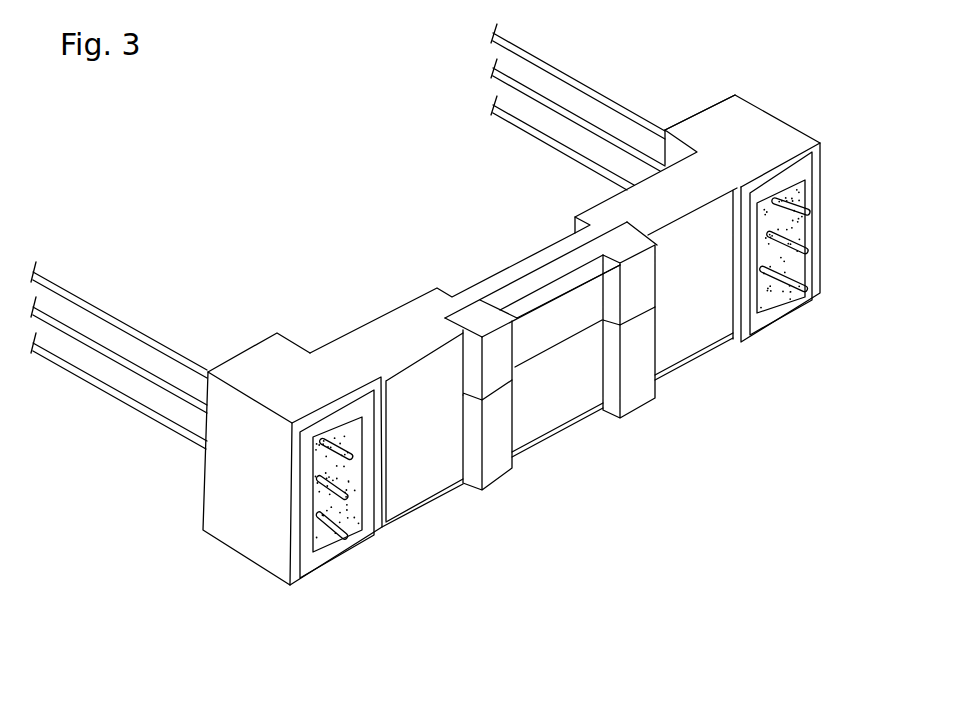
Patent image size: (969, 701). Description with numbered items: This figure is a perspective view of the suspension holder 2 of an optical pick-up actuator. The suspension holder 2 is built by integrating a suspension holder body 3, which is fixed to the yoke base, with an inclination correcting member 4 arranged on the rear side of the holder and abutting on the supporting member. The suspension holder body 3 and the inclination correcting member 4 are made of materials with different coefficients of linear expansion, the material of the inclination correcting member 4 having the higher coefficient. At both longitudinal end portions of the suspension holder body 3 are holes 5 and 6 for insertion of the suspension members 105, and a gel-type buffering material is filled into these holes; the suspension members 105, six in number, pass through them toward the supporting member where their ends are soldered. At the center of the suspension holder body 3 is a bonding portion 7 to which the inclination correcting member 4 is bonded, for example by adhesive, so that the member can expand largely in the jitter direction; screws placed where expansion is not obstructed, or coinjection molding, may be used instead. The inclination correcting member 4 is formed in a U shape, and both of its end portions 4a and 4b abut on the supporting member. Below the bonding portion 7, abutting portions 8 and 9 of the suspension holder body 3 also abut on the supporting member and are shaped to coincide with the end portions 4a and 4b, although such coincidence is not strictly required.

The suspension holder 2 is at (227, 548).
The suspension holder body 3 is at (768, 125).
The inclination correcting member 4 is at (547, 307).
The end portion of the inclination correcting member 4a is at (487, 322).
The end portion of the inclination correcting member 4b is at (623, 248).
The hole for insertion of the suspension members 5 is at (350, 513).
The hole for insertion of the suspension members 6 is at (773, 268).
The bonding portion 7 is at (550, 350).
The abutting portion 8 is at (498, 460).
The abutting portion 9 is at (638, 385).
The suspension members 105 is at (122, 397).